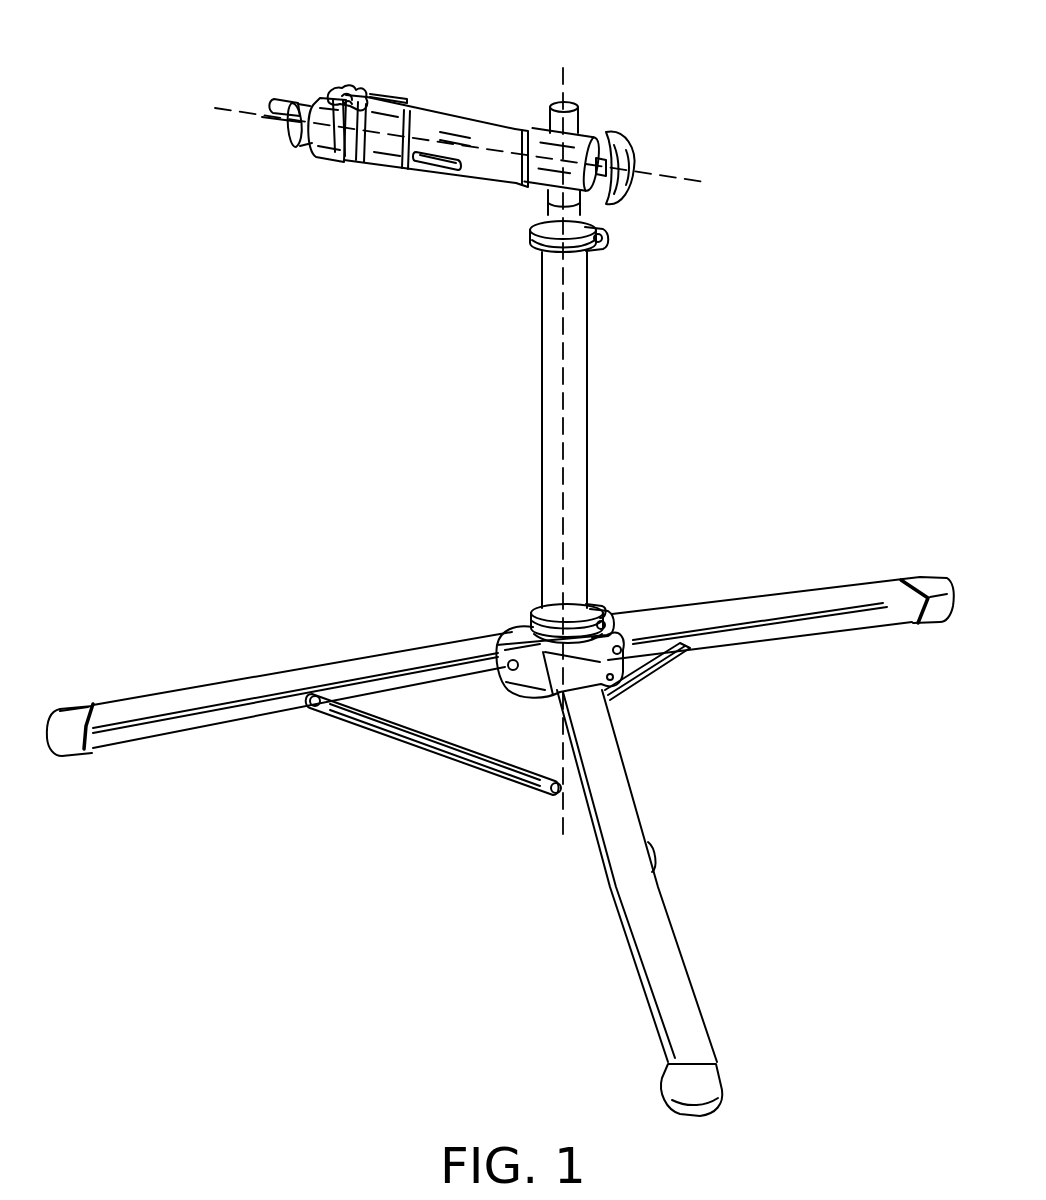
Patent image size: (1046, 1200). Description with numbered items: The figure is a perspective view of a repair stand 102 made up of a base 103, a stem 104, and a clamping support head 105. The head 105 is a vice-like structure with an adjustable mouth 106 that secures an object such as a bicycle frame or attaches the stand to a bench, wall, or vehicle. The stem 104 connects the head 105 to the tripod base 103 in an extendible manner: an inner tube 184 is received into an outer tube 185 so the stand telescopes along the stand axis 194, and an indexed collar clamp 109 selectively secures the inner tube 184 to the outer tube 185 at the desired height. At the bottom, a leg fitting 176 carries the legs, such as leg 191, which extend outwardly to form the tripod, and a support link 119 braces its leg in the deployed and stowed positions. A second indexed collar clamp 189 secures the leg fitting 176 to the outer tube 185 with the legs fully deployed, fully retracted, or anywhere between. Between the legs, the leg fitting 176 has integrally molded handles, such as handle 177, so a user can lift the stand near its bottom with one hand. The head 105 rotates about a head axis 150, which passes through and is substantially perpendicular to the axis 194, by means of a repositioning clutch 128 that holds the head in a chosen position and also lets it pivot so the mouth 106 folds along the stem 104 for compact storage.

The repair stand 102 is at (140, 145).
The base 103 is at (734, 574).
The stem 104 is at (510, 400).
The clamping support head 105 is at (368, 195).
The adjustable mouth 106 is at (352, 66).
The indexed collar clamp 109 is at (534, 248).
The support link 119 is at (318, 704).
The repositioning clutch 128 is at (502, 200).
The axis 150 is at (262, 118).
The leg fitting 176 is at (512, 630).
The handle 177 is at (526, 686).
The inner tube 184 is at (578, 215).
The outer tube 185 is at (578, 305).
The indexed collar clamp 189 is at (590, 606).
The leg 191 is at (620, 800).
The axis 194 is at (566, 78).